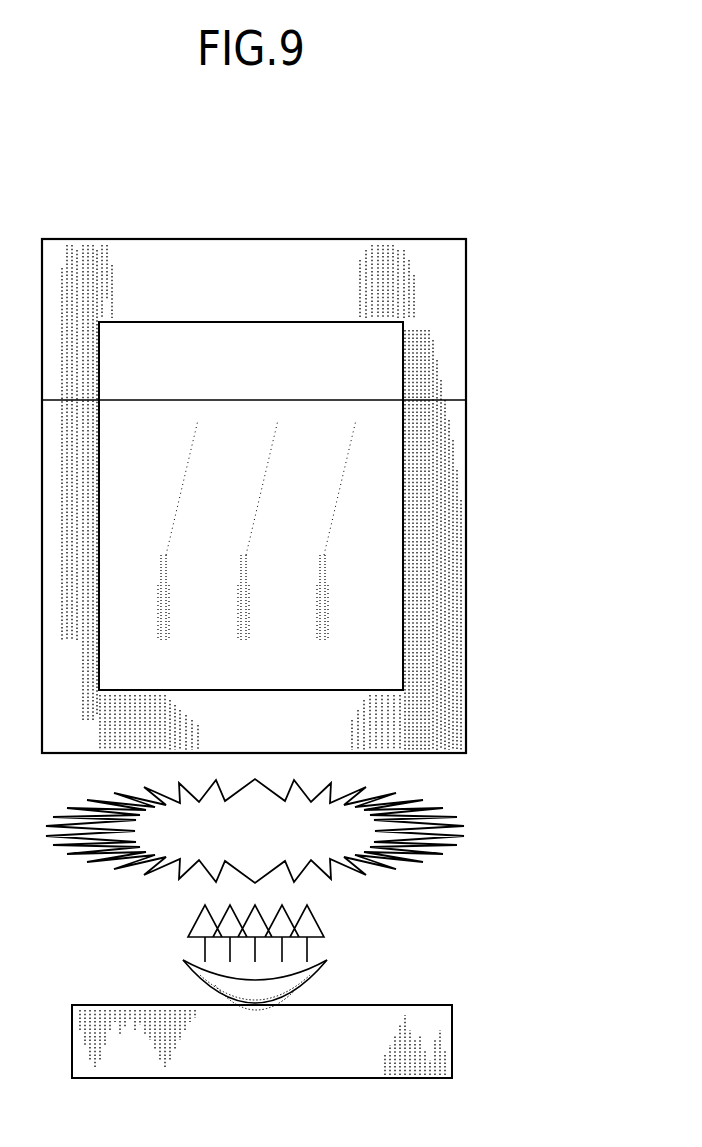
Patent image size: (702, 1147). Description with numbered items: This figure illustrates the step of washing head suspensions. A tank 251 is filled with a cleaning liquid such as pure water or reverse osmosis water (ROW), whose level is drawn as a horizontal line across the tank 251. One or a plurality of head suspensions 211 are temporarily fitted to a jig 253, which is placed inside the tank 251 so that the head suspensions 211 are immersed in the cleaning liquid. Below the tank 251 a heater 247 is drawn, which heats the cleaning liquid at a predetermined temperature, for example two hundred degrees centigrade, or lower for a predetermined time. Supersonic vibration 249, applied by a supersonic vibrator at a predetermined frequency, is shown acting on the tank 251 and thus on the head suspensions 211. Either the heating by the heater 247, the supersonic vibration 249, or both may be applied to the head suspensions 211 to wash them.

The tank 251 is at (466, 313).
The jig 253 is at (327, 322).
The reverse osmosis water ROW is at (443, 558).
The head suspension 211 is at (163, 630).
The supersonic vibration 249 is at (457, 820).
The heater 247 is at (452, 1030).